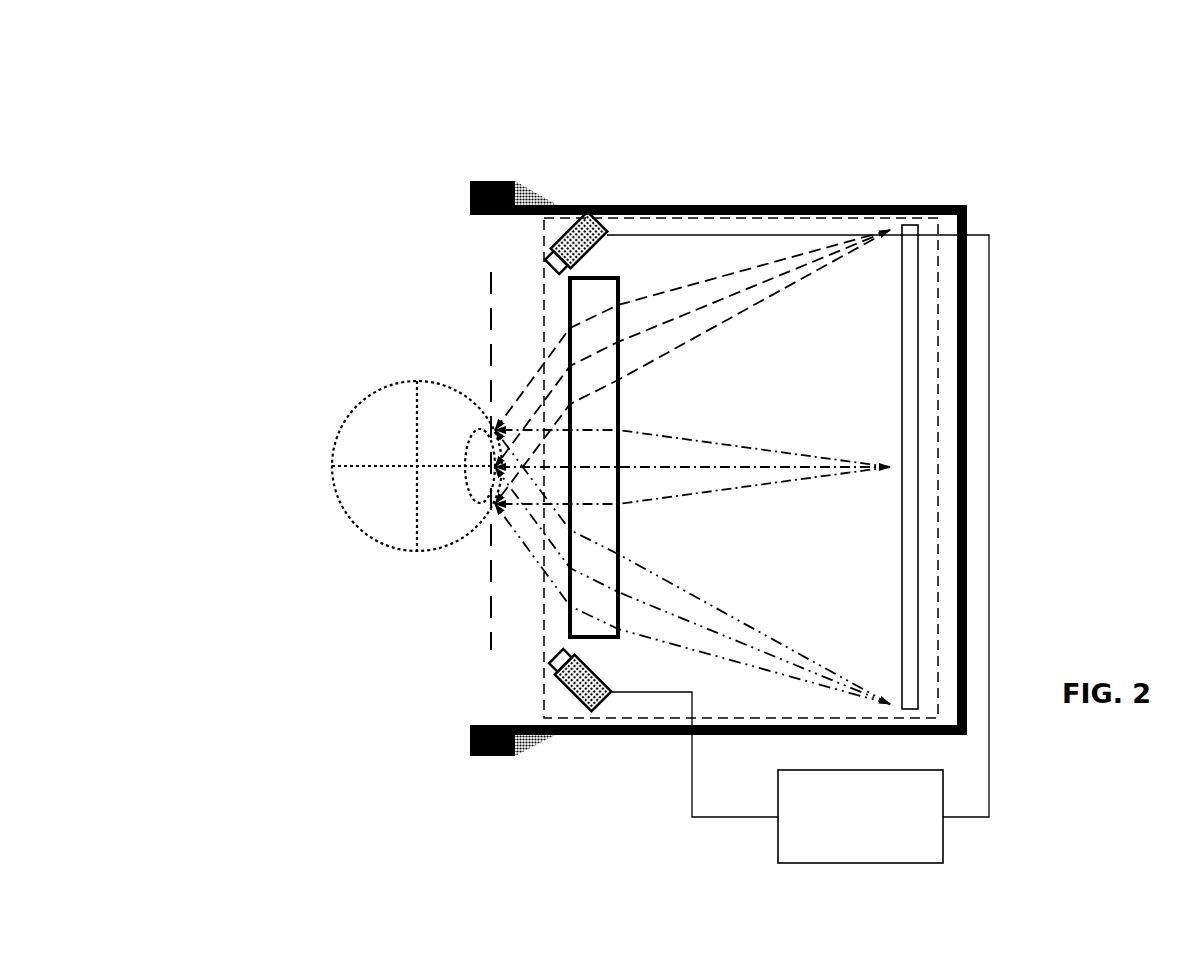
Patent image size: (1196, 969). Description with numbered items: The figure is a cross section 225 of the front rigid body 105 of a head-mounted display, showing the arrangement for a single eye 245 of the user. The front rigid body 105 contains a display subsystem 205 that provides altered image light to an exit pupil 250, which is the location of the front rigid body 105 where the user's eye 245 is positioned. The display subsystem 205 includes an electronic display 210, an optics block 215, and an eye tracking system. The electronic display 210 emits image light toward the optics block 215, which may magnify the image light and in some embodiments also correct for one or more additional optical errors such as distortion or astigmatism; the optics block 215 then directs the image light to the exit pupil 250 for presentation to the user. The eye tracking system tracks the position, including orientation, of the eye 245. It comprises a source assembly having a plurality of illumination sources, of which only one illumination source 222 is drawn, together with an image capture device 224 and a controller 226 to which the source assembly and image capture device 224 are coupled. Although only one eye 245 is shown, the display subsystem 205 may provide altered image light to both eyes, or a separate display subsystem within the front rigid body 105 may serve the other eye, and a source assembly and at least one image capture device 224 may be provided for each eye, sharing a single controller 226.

The cross section 225 is at (665, 450).
The front rigid body 105 is at (927, 200).
The display subsystem 205 is at (542, 612).
The electronic display 210 is at (920, 367).
The optics block 215 is at (563, 292).
The illumination source 222 is at (593, 232).
The image capture device 224 is at (575, 692).
The controller 226 is at (860, 816).
The eye 245 is at (373, 392).
The exit pupil 250 is at (483, 630).